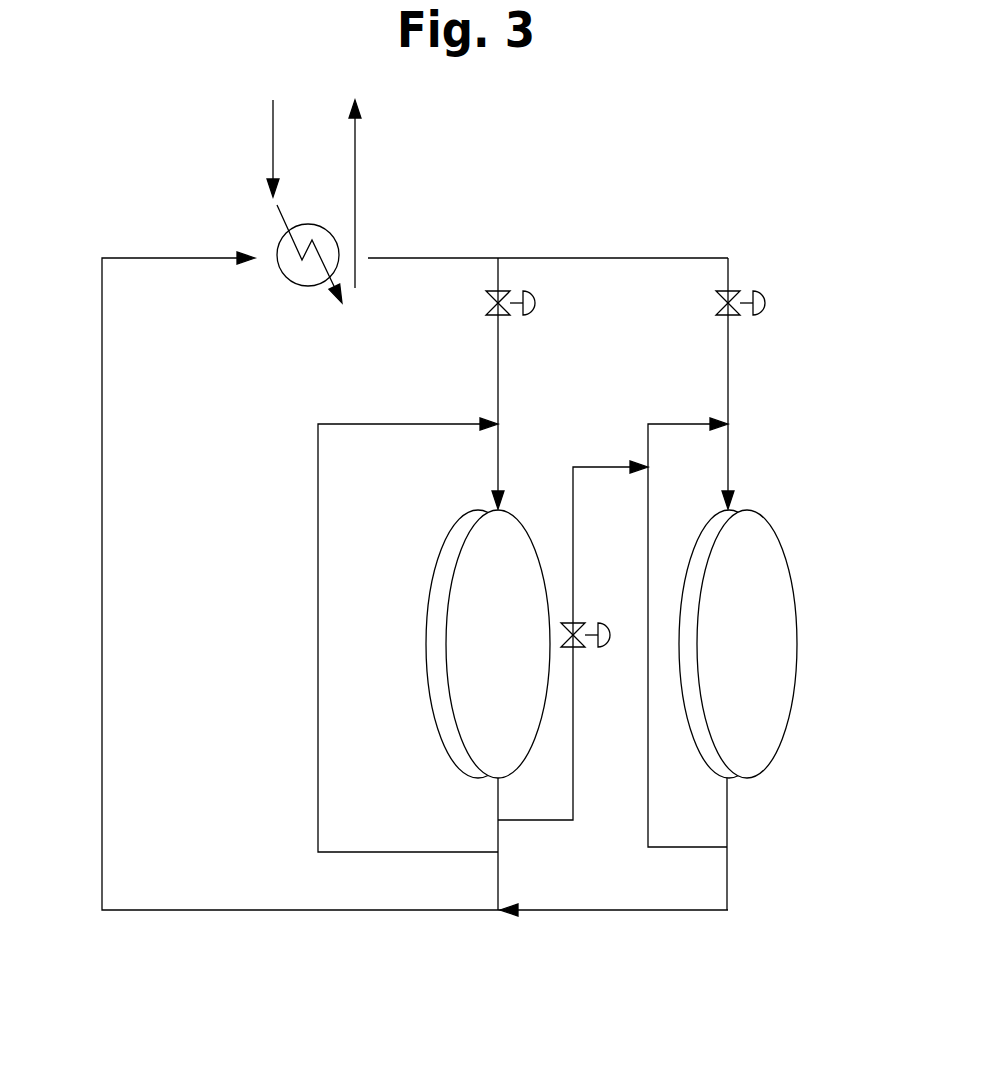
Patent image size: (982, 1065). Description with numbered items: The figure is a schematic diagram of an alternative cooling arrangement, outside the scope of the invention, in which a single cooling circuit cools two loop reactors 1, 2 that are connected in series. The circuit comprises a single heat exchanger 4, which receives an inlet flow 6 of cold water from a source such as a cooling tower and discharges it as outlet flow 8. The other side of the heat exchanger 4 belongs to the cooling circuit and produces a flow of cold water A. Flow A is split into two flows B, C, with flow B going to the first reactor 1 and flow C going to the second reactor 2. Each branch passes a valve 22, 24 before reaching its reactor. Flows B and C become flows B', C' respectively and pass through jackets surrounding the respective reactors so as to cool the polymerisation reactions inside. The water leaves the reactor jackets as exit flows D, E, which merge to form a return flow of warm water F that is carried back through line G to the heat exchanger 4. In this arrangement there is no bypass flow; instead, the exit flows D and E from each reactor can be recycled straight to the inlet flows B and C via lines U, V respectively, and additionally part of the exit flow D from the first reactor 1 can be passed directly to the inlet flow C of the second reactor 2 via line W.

The loop reactor 1 is at (523, 765).
The loop reactor 2 is at (688, 755).
The heat exchanger 4 is at (276, 247).
The inlet flow 6 is at (272, 141).
The outlet flow 8 is at (355, 178).
The valve in line B 22 is at (502, 290).
The valve in line C 24 is at (723, 290).
The flow of cold water A is at (397, 258).
The flow B is at (552, 383).
The flow B' is at (558, 427).
The flow C is at (780, 383).
The flow C' is at (789, 476).
The exit flow D is at (498, 875).
The exit flow E is at (727, 879).
The return flow of warm water F is at (273, 910).
The recycle stream to heat exchanger G is at (102, 388).
The line U is at (318, 599).
The line V is at (648, 745).
The line W is at (573, 562).